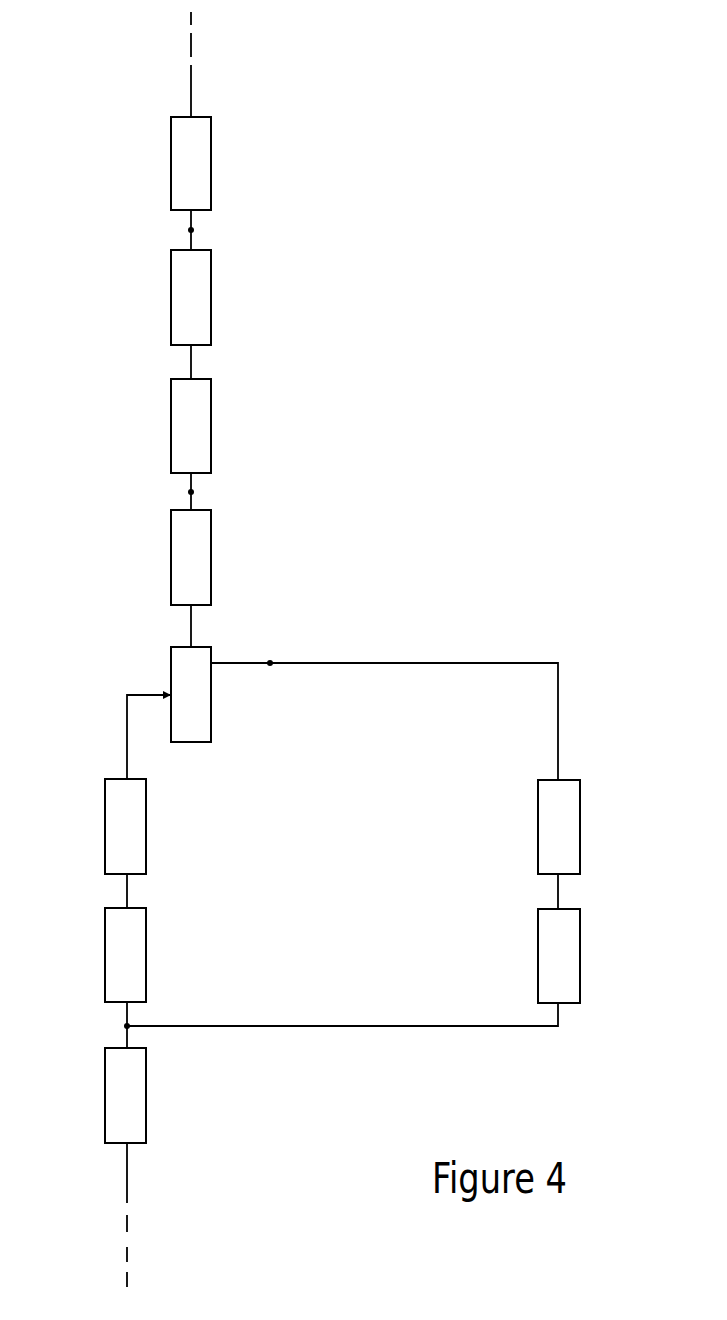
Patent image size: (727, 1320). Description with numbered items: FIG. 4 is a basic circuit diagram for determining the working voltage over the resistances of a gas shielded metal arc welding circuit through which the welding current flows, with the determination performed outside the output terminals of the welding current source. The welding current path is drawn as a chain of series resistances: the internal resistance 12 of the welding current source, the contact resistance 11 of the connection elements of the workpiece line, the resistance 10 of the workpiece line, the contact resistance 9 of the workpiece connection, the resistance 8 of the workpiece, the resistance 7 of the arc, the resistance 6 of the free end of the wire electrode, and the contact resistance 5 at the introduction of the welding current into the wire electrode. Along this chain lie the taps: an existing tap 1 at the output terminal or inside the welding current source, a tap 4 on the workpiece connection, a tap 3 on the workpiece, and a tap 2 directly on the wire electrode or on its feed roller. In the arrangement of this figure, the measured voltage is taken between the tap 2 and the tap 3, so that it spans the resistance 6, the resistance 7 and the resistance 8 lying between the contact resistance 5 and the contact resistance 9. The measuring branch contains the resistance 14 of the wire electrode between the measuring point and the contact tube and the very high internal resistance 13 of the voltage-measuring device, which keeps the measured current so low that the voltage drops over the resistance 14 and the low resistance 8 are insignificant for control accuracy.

The tap 1 is at (188, 230).
The tap 2 is at (125, 1026).
The tap 3 is at (270, 663).
The tap 4 is at (188, 492).
The contact resistance 5 is at (125, 1098).
The resistance of the free end of the wire electrode 6 is at (125, 957).
The resistance of the arc 7 is at (125, 830).
The resistance of the workpiece 8 is at (182, 672).
The contact resistance of the workpiece connection 9 is at (182, 556).
The resistance of the workpiece line 10 is at (182, 429).
The contact resistance of the connection elements of the workpiece line 11 is at (182, 295).
The internal resistance of the welding current source 12 is at (182, 160).
The internal resistance of the voltage-measuring device 13 is at (568, 832).
The resistance of the wire electrode 14 is at (568, 957).